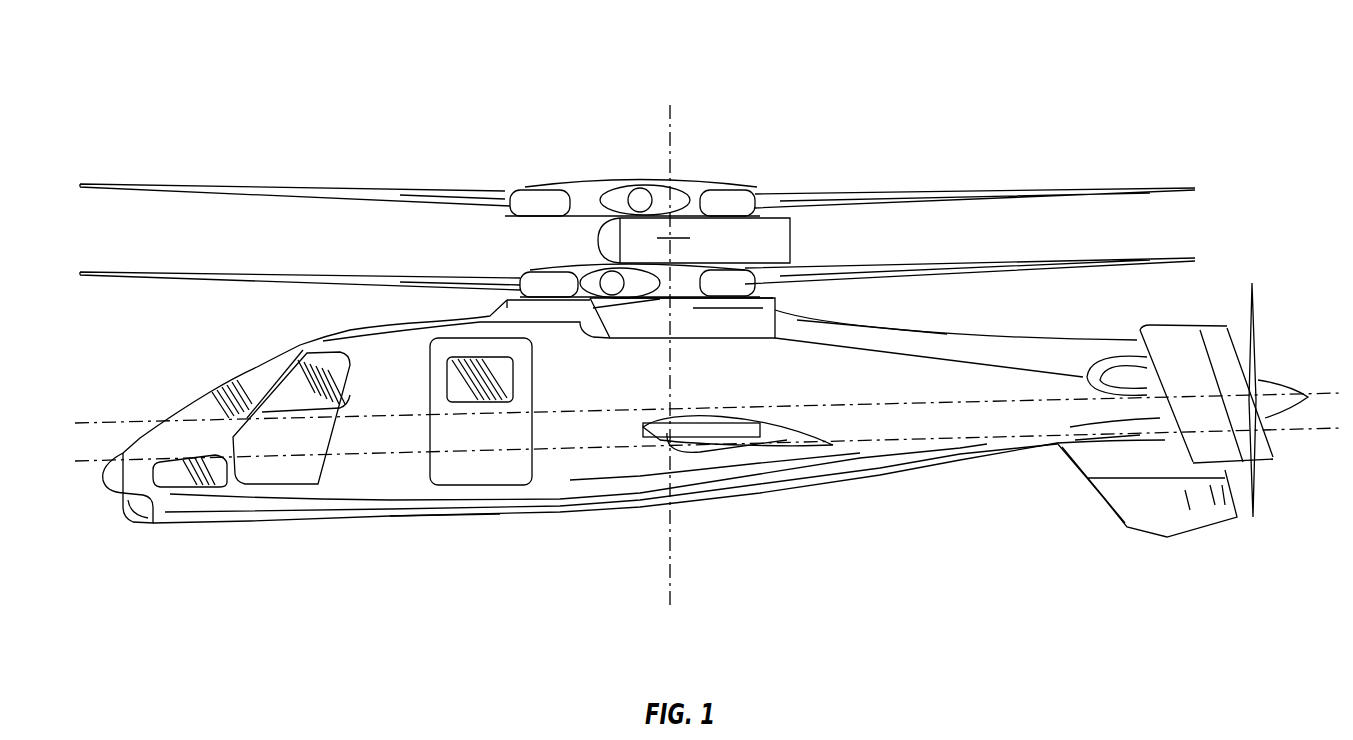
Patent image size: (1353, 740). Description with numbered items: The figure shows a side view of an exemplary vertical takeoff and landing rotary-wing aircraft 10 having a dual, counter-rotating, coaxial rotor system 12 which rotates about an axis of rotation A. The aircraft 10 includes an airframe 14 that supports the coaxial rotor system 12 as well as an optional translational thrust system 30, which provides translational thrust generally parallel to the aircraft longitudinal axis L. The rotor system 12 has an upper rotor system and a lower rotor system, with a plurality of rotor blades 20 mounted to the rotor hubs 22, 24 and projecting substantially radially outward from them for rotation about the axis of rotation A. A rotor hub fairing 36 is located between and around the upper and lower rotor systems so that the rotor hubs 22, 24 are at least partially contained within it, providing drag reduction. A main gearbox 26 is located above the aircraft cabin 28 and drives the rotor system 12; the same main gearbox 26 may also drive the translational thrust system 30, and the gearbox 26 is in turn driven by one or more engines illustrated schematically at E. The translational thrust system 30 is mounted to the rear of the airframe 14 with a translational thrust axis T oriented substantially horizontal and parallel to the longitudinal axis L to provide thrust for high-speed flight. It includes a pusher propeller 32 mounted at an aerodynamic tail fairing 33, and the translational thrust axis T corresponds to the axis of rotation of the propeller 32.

The rotary-wing aircraft 10 is at (850, 69).
The dual, counter-rotating, coaxial rotor system 12 is at (743, 155).
The airframe 14 is at (307, 348).
The rotor blades 20 is at (1013, 261).
The rotor hub 22 is at (612, 185).
The rotor hub 24 is at (597, 262).
The main gearbox 26 is at (637, 323).
The aircraft cabin 28 is at (390, 492).
The translational thrust system 30 is at (1256, 270).
The pusher propeller 32 is at (1260, 478).
The aerodynamic tail fairing 33 is at (1133, 503).
The rotor hub fairing 36 is at (790, 238).
The engines E is at (763, 320).
The axis of rotation A is at (670, 373).
The translational thrust axis T is at (696, 415).
The aircraft longitudinal axis L is at (697, 453).